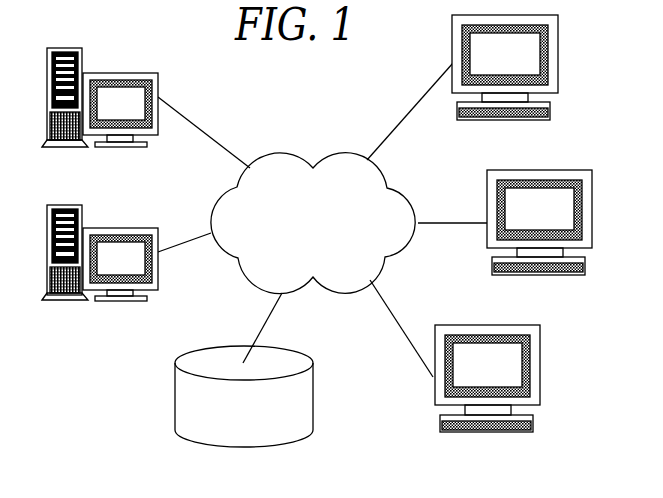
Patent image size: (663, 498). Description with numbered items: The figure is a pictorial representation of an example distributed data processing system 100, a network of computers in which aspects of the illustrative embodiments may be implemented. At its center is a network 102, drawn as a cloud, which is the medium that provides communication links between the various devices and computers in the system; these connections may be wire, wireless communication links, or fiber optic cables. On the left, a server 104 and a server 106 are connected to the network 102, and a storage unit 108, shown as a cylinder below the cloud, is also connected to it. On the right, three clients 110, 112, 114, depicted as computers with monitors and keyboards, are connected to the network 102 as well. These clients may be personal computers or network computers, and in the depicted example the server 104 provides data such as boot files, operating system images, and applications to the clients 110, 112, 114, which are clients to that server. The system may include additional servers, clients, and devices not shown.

The distributed data processing system 100 is at (127, 378).
The network 102 is at (283, 151).
The server 104 is at (118, 73).
The server 106 is at (118, 228).
The storage unit 108 is at (313, 387).
The client 110 is at (558, 53).
The client 112 is at (592, 214).
The client 114 is at (540, 368).